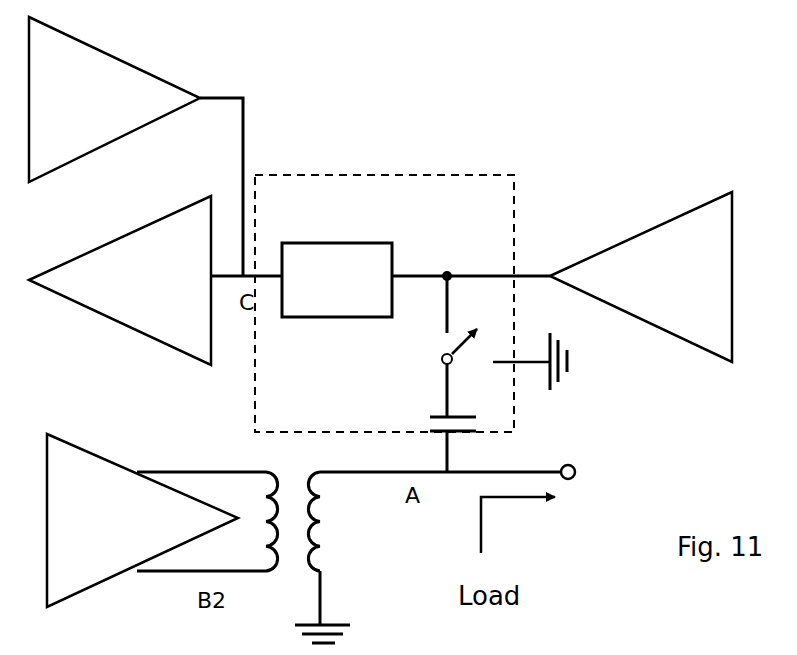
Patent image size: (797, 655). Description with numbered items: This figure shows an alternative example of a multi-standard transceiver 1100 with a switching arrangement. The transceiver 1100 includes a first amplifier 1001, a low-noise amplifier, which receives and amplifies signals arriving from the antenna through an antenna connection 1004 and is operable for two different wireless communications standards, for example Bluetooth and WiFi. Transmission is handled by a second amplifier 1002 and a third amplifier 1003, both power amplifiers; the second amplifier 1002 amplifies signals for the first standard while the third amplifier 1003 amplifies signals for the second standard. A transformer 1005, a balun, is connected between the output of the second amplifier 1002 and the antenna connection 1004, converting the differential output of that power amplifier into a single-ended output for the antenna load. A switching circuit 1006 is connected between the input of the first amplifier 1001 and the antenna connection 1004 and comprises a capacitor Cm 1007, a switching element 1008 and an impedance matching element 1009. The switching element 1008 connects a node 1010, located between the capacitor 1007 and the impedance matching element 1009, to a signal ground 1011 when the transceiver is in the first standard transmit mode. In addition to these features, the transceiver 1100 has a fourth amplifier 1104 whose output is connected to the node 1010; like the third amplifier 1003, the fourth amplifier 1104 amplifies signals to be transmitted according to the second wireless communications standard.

The first amplifier 1001 is at (96, 290).
The second amplifier 1002 is at (102, 580).
The third amplifier 1003 is at (130, 88).
The antenna connection 1004 is at (578, 465).
The transformer 1005 is at (275, 460).
The switching circuit 1006 is at (395, 175).
The capacitor Cm 1007 is at (370, 407).
The switching element 1008 is at (428, 337).
The impedance matching element 1009 is at (416, 280).
The node 1010 is at (451, 272).
The signal ground 1011 is at (562, 376).
The multi-standard transceiver 1100 is at (310, 80).
The fourth amplifier 1104 is at (683, 238).